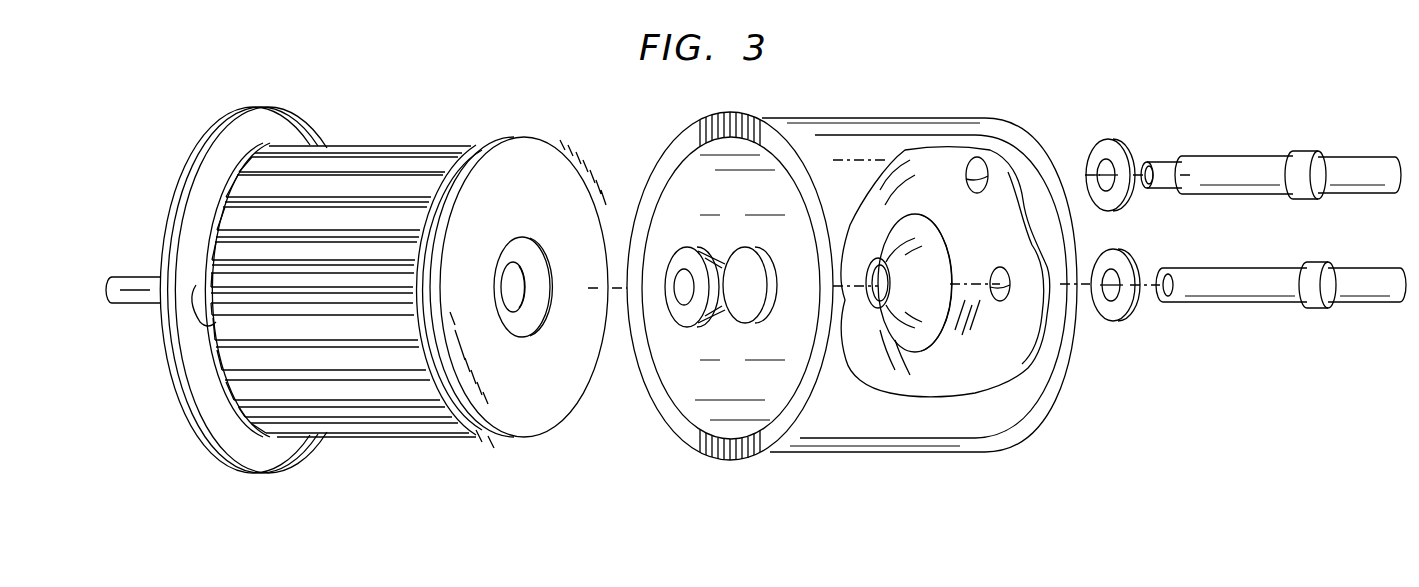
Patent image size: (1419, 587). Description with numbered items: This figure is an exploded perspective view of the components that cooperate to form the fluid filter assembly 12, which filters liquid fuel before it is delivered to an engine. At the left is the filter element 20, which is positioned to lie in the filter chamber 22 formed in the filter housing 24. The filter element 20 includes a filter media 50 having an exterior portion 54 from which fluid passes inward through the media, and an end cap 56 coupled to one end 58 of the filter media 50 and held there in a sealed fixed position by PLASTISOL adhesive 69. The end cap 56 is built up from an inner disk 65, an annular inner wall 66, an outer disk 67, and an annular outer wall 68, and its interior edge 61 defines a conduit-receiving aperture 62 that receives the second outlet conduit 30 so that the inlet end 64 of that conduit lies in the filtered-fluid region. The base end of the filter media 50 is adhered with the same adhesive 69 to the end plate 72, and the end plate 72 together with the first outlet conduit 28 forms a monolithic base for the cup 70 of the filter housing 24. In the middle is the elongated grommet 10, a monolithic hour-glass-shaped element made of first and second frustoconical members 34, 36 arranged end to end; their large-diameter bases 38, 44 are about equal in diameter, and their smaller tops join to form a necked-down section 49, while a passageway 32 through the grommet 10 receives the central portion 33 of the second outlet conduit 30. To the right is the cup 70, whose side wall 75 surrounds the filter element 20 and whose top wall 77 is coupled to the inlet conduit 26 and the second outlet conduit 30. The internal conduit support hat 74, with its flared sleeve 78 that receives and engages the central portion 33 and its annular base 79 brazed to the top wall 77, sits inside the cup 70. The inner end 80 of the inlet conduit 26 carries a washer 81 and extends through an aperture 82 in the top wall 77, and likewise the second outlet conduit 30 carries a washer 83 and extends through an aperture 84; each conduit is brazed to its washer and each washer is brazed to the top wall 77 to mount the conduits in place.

The elongated grommet 10 is at (702, 228).
The fluid filter assembly 12 is at (913, 56).
The filter element 20 is at (503, 128).
The filter chamber 22 is at (705, 408).
The filter housing 24 is at (480, 497).
The inlet conduit 26 is at (1255, 150).
The first outlet conduit 28 is at (137, 272).
The second outlet conduit 30 is at (1281, 292).
The passageway 32 is at (680, 275).
The central portion 33 is at (1240, 268).
The first frustoconical member 34 is at (700, 330).
The second frustoconical member 36 is at (752, 328).
The large-diameter base 38 is at (680, 314).
The large-diameter base 44 is at (768, 264).
The necked-down section 49 is at (723, 240).
The filter media 50 is at (398, 144).
The exterior portion 54 is at (355, 143).
The end cap 56 is at (548, 143).
The end 58 is at (432, 160).
The interior edge 61 is at (505, 290).
The conduit-receiving aperture 62 is at (528, 298).
The inlet end 64 is at (1175, 302).
The inner disk 65 is at (514, 254).
The annular inner wall 66 is at (548, 275).
The outer disk 67 is at (575, 382).
The annular outer wall 68 is at (492, 440).
The PLASTISOL adhesive 69 is at (214, 322).
The cup 70 is at (943, 117).
The end plate 72 is at (219, 113).
The internal conduit support hat 74 is at (925, 210).
The side wall 75 is at (857, 133).
The top wall 77 is at (990, 375).
The flared sleeve 78 is at (898, 258).
The annular base 79 is at (900, 340).
The inner end 80 is at (1158, 163).
The washer 81 is at (1100, 148).
The aperture 82 is at (972, 194).
The washer 83 is at (1108, 316).
The aperture 84 is at (997, 302).